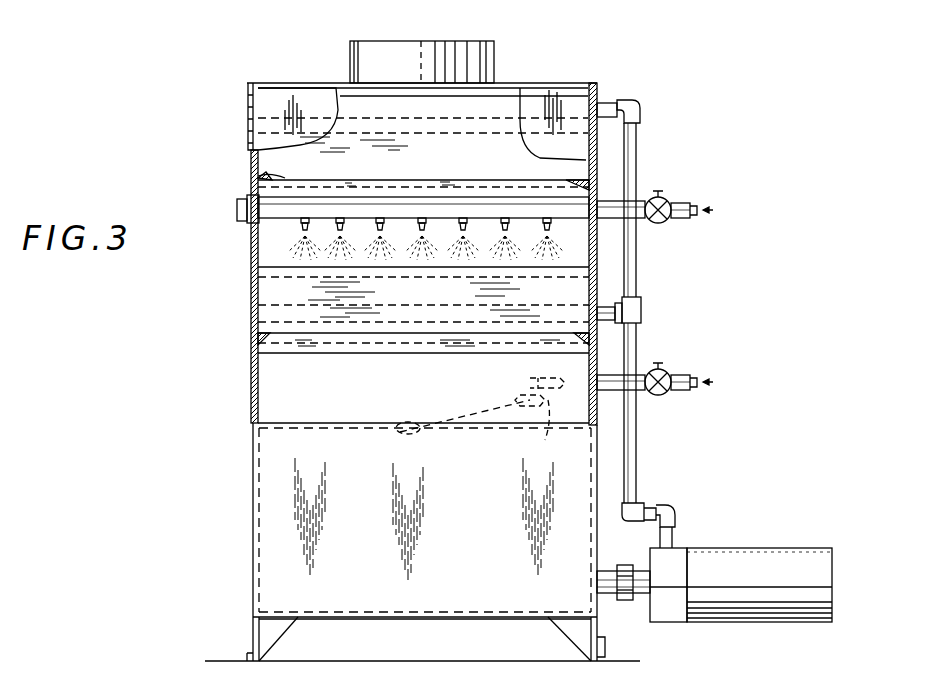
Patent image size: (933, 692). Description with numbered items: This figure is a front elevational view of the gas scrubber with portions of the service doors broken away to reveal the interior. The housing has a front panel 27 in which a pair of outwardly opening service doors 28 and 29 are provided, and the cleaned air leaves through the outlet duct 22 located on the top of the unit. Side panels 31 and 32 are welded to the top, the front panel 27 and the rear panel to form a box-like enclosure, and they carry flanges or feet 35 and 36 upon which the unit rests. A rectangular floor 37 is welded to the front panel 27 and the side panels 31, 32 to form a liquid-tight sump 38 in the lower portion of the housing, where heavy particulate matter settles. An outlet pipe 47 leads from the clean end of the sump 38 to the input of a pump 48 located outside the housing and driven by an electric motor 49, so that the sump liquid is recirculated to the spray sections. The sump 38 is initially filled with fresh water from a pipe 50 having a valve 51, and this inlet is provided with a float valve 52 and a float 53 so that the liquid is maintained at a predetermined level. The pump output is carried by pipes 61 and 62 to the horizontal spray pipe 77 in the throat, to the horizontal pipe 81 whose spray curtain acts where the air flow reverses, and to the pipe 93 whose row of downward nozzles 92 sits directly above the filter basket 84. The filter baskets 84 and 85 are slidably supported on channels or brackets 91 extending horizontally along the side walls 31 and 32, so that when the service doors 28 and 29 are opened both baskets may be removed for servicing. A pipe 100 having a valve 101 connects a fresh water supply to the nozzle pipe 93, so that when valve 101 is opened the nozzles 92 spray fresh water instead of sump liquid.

The outlet duct 22 is at (491, 68).
The front panel 27 is at (268, 542).
The service door 28 is at (276, 88).
The service door 29 is at (568, 95).
The side panel 31 is at (590, 235).
The side panel 32 is at (270, 292).
The foot 35 is at (606, 645).
The foot 36 is at (248, 650).
The floor 37 is at (358, 620).
The sump 38 is at (298, 480).
The outlet pipe 47 is at (600, 575).
The pump 48 is at (672, 565).
The electric motor 49 is at (760, 560).
The pipe 50 is at (686, 375).
The valve 51 is at (663, 369).
The float valve 52 is at (546, 440).
The float 53 is at (428, 425).
The pipe 61 is at (634, 258).
The pipe 62 is at (638, 467).
The pipe 77 is at (606, 310).
The pipe 81 is at (606, 103).
The filter basket 84 is at (258, 322).
The filter basket 85 is at (258, 163).
The brackets 91 is at (258, 178).
The nozzles 92 is at (304, 232).
The pipe 93 is at (395, 210).
The pipe 100 is at (686, 202).
The valve 101 is at (662, 197).